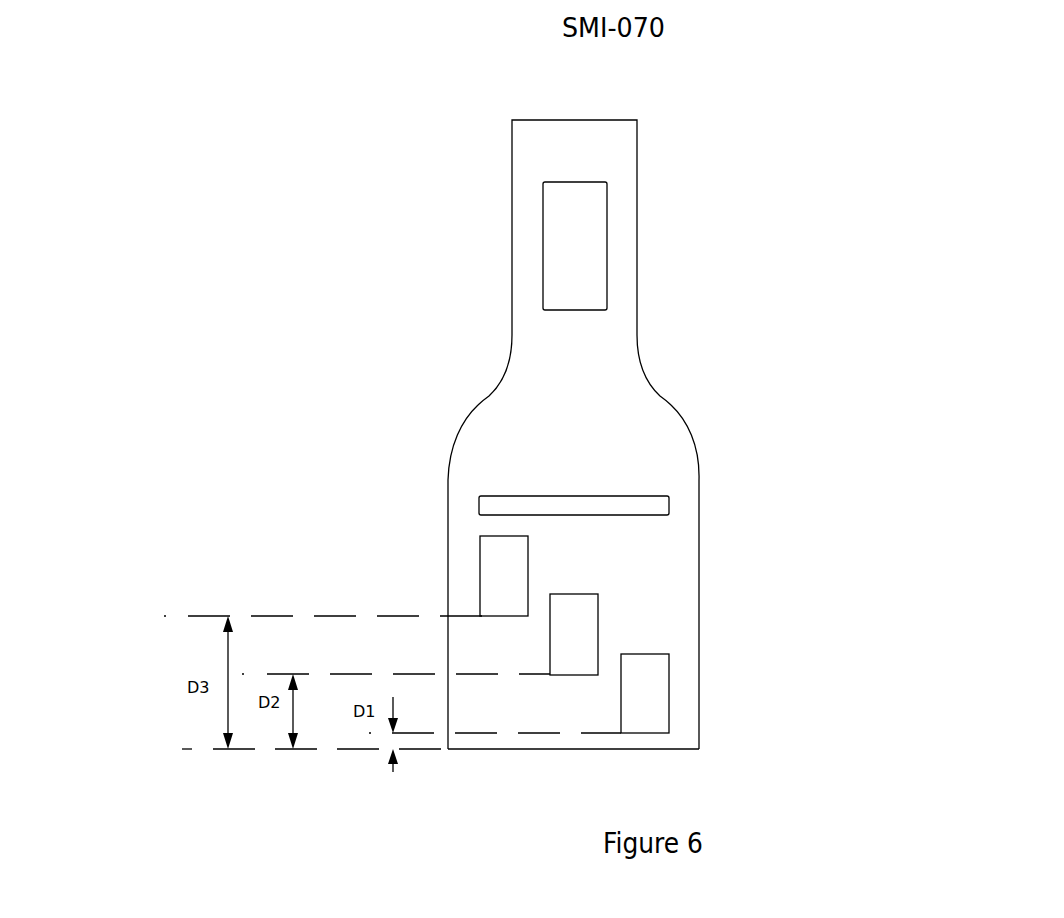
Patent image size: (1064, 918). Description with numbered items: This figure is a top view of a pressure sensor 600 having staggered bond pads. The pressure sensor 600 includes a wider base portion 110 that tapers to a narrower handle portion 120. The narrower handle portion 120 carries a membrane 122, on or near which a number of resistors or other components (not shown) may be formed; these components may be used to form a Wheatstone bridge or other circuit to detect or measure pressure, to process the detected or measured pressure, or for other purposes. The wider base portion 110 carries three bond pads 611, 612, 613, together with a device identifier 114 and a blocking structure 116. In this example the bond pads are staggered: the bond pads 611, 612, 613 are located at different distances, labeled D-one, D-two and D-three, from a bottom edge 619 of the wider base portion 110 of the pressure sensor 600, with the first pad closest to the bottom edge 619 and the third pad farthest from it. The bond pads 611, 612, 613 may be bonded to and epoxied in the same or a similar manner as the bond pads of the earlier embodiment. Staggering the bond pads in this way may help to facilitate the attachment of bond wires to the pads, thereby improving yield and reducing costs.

The pressure sensor 600 is at (922, 207).
The wider base portion 110 is at (699, 660).
The narrower handle portion 120 is at (512, 207).
The membrane 122 is at (590, 215).
The device identifier 114 is at (600, 462).
The blocking structure 116 is at (639, 496).
The bond pad 613 is at (480, 543).
The bond pad 612 is at (598, 594).
The bond pad 611 is at (669, 654).
The bottom edge 619 is at (679, 749).